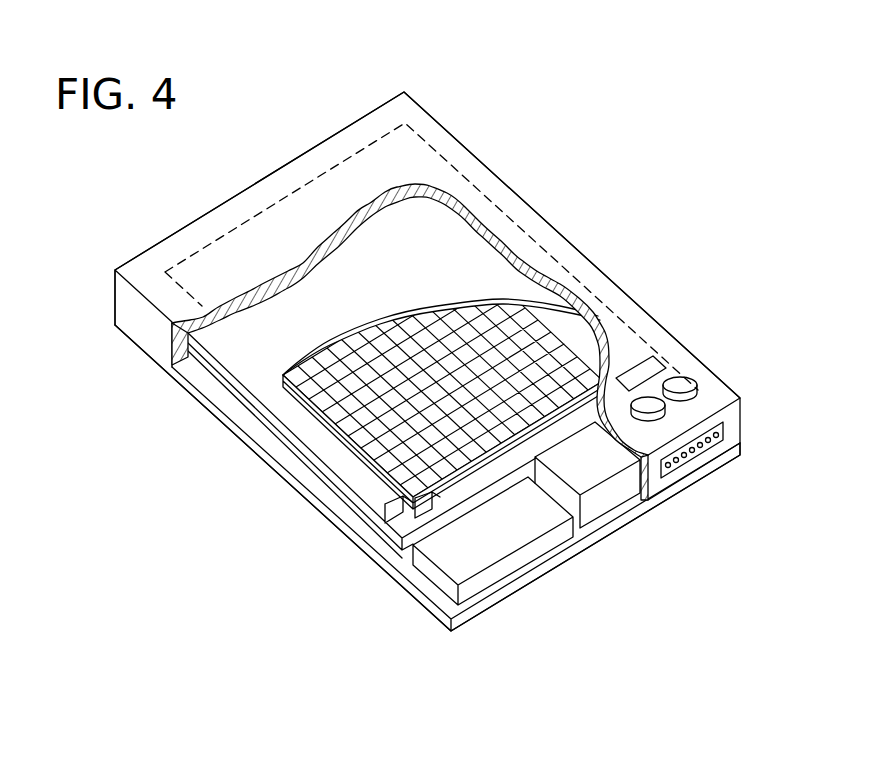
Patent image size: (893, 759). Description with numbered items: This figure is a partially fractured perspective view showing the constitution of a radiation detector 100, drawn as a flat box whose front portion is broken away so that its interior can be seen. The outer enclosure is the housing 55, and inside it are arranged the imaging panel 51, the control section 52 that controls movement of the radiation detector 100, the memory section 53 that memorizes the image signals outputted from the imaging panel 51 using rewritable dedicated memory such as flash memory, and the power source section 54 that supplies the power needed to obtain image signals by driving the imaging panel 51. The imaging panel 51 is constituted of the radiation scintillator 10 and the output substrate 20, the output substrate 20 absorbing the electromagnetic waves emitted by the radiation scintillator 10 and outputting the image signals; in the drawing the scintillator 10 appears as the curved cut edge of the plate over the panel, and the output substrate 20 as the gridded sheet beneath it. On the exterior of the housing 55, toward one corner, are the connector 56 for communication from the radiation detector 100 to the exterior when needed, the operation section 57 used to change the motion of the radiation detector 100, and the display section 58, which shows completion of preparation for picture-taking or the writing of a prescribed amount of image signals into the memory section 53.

The radiation detector 100 is at (577, 150).
The radiation scintillator 10 is at (490, 282).
The output substrate 20 is at (594, 314).
The imaging panel 51 is at (250, 364).
The control section 52 is at (612, 513).
The memory section 53 is at (518, 568).
The power source section 54 is at (335, 487).
The housing 55 is at (480, 160).
The connector 56 is at (697, 462).
The operation section 57 is at (698, 388).
The display section 58 is at (662, 362).